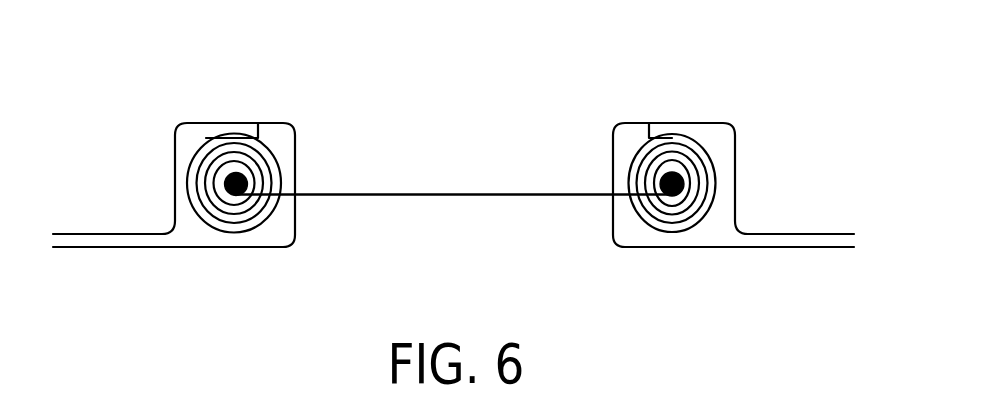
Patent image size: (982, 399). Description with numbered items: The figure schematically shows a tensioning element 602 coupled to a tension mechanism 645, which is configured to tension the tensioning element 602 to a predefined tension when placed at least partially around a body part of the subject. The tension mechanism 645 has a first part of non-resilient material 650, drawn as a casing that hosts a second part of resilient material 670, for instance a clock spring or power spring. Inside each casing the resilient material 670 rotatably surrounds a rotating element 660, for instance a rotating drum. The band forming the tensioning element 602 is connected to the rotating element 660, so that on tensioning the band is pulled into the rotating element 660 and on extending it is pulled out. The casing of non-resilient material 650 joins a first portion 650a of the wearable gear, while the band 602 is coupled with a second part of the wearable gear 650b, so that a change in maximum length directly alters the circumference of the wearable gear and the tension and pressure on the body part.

The tension mechanism 645 is at (99, 89).
The non-resilient material 650 is at (193, 233).
The first lead portion 650a is at (76, 233).
The second part of the wearable gear 650b is at (822, 233).
The rotating element 660 is at (236, 190).
The resilient material 670 is at (205, 138).
The tensioning element 602 is at (462, 194).